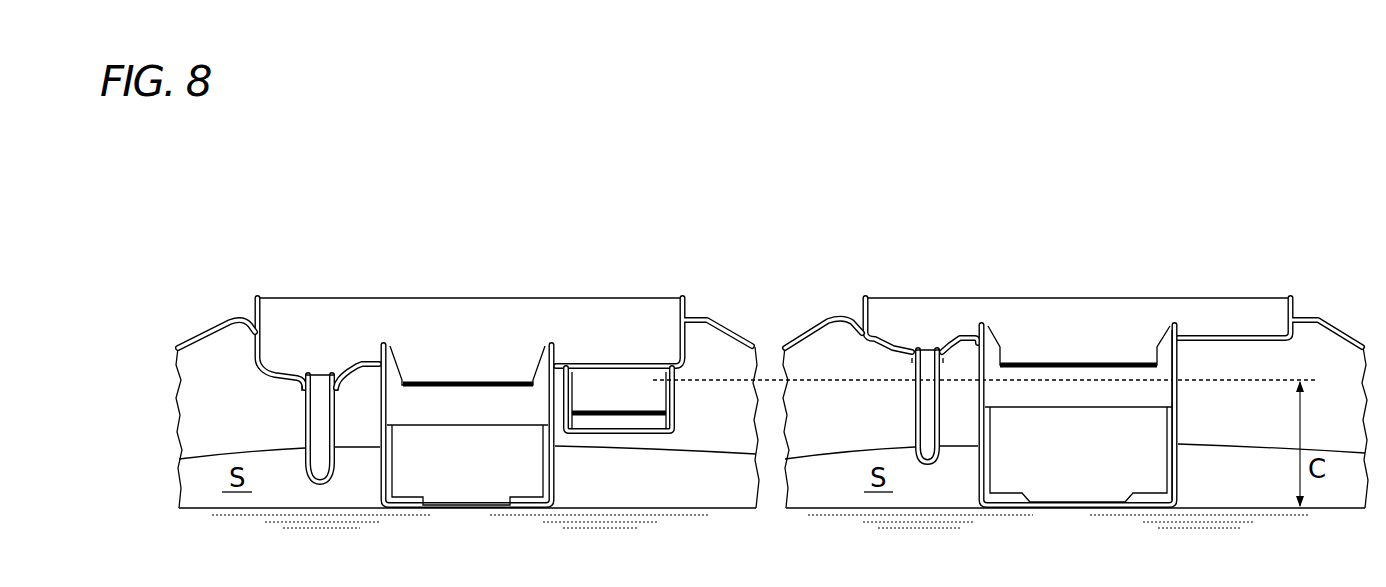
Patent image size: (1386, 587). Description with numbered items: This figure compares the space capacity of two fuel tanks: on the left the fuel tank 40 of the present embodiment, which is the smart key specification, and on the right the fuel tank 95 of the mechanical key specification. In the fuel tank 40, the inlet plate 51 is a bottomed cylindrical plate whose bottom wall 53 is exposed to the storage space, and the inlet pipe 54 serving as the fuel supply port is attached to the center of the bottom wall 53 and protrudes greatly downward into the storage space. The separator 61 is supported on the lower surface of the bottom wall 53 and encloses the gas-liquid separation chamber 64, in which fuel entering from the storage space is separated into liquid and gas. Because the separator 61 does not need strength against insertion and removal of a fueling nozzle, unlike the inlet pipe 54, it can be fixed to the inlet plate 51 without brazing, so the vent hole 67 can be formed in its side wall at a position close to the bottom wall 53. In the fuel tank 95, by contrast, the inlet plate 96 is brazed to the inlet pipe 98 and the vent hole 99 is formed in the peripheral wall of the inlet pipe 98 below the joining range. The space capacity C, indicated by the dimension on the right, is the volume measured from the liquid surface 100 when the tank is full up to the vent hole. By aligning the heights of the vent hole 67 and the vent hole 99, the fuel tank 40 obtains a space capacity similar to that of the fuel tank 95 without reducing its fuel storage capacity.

The fuel tank 40 is at (233, 297).
The inlet plate 51 is at (253, 365).
The bottom wall 53 is at (582, 363).
The inlet pipe 54 is at (380, 470).
The separator 61 is at (670, 405).
The gas-liquid separation chamber 64 is at (638, 395).
The vent hole 67 is at (653, 380).
The liquid surface 100 is at (630, 505).
The fuel tank 95 is at (848, 297).
The inlet plate 96 is at (885, 353).
The inlet pipe 98 is at (978, 465).
The vent hole 99 is at (1180, 385).